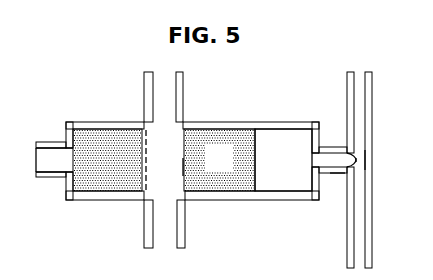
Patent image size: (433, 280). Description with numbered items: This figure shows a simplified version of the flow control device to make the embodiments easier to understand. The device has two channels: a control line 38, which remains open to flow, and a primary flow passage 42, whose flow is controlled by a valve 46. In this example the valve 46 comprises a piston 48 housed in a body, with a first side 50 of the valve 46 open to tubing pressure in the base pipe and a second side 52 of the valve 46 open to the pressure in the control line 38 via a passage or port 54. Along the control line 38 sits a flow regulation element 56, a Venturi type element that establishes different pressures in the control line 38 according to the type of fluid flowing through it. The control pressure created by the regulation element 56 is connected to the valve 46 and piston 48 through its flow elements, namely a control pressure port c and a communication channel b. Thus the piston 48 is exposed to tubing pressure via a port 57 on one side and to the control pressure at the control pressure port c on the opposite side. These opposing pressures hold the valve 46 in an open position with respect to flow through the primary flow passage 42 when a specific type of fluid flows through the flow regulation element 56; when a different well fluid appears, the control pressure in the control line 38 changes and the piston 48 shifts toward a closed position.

The control line 38 is at (372, 220).
The primary flow passage 42 is at (145, 218).
The valve 46 is at (196, 205).
The piston 48 is at (230, 170).
The first side of the valve 50 is at (70, 161).
The second side of the valve 52 is at (262, 151).
The passage or port 54 is at (303, 161).
The flow regulation element 56 is at (366, 155).
The port 57 is at (50, 178).
The communication channel b is at (342, 175).
The control pressure port c is at (357, 161).